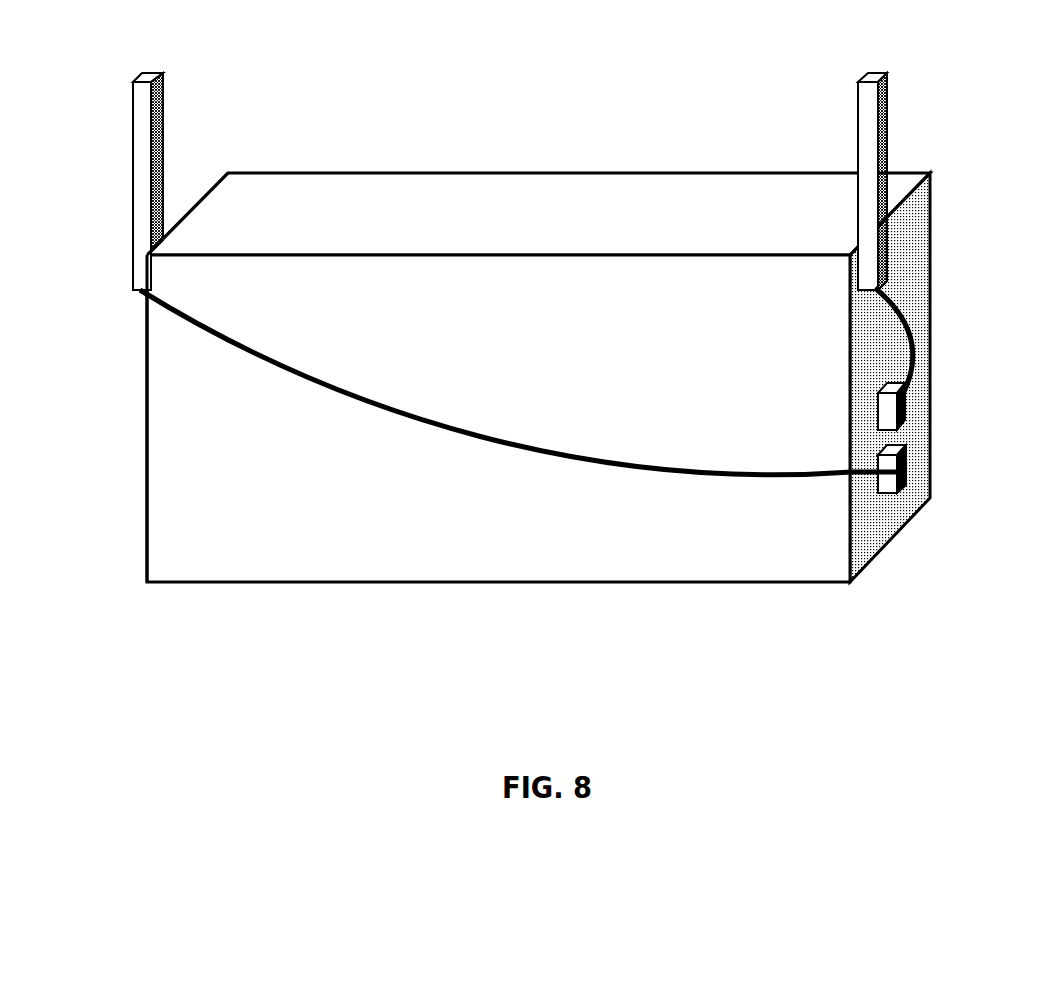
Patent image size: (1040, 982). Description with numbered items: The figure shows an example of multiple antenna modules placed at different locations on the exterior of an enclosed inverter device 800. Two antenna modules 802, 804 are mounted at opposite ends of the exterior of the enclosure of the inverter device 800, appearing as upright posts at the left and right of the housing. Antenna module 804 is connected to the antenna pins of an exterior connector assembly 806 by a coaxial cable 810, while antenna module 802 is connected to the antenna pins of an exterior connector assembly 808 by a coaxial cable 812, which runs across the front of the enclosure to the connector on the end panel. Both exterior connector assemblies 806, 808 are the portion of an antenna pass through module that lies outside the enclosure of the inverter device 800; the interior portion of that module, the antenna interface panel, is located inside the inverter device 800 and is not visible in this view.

The inverter device 800 is at (441, 181).
The antenna module 802 is at (137, 147).
The antenna module 804 is at (887, 145).
The exterior connector assembly 806 is at (897, 384).
The exterior connector assembly 808 is at (883, 488).
The coaxial cable 810 is at (912, 322).
The coaxial cable 812 is at (458, 430).